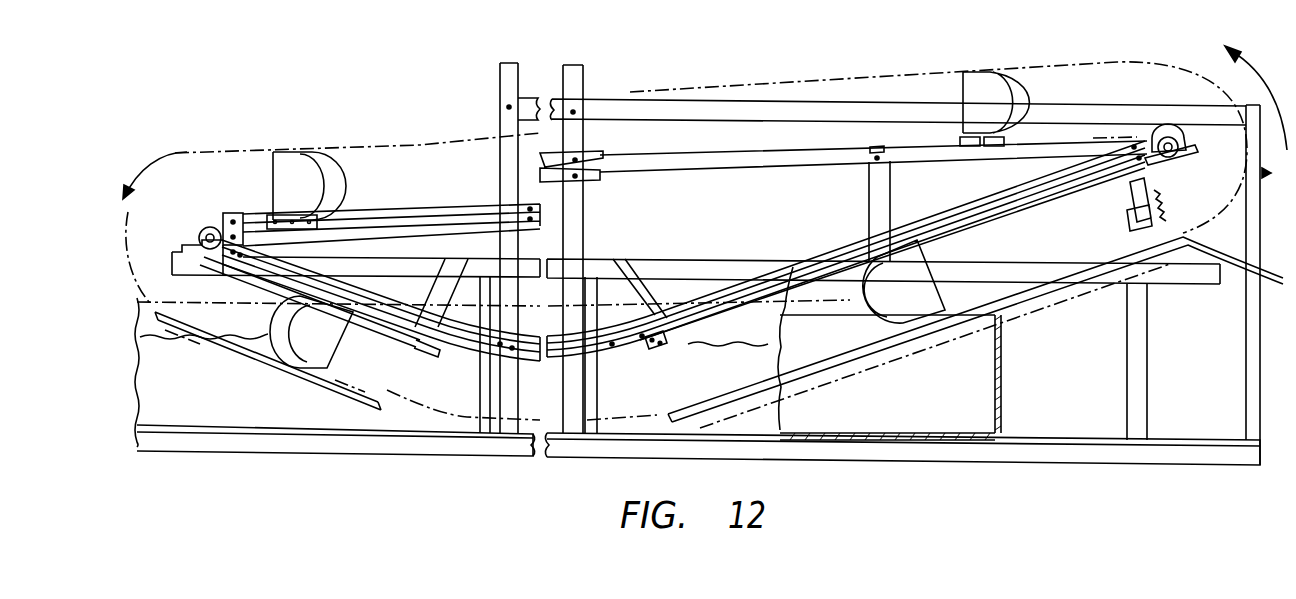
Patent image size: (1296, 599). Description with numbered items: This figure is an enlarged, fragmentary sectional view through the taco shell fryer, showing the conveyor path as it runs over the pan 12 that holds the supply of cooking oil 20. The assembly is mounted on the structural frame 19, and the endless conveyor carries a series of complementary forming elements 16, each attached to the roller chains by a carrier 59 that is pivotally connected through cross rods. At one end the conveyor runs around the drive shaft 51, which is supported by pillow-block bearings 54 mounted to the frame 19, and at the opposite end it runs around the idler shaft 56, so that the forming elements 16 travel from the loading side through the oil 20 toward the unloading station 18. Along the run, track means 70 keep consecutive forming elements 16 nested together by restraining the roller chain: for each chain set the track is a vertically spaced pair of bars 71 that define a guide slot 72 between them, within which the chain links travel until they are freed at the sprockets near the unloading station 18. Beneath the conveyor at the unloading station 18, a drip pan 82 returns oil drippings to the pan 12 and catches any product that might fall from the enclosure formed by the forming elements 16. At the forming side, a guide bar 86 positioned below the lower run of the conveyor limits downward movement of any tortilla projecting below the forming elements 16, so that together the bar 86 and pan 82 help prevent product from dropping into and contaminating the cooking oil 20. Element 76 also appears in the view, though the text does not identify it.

The pan 12 is at (1005, 363).
The forming elements 16 is at (311, 192).
The unloading station 18 is at (1246, 171).
The structural frame 19 is at (182, 263).
The cooking oil 20 is at (717, 378).
The drive shaft 51 is at (210, 227).
The bearings 54 is at (202, 239).
The idler shaft 56 is at (1165, 135).
The carrier 59 is at (277, 219).
The track means 70 is at (943, 222).
The bars 71 is at (828, 268).
The guide slot 72 is at (710, 312).
The adjustment bracket 76 is at (1128, 219).
The drip pan 82 is at (1042, 288).
The guide bar 86 is at (258, 367).